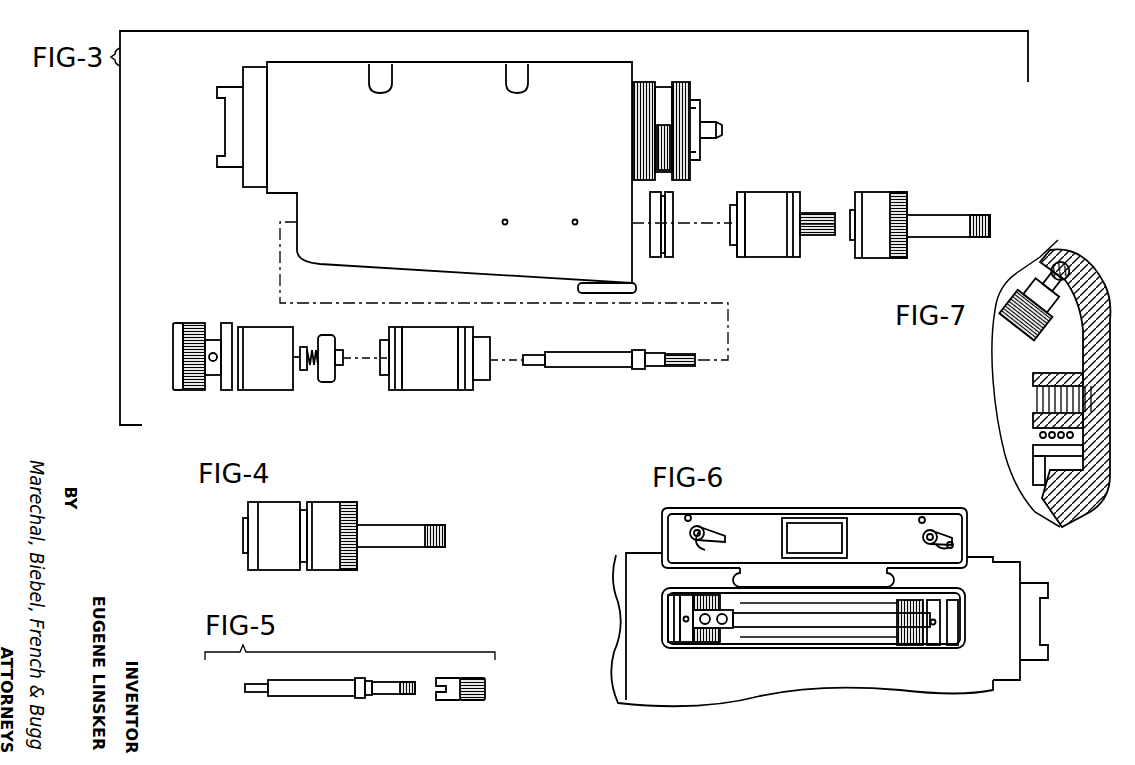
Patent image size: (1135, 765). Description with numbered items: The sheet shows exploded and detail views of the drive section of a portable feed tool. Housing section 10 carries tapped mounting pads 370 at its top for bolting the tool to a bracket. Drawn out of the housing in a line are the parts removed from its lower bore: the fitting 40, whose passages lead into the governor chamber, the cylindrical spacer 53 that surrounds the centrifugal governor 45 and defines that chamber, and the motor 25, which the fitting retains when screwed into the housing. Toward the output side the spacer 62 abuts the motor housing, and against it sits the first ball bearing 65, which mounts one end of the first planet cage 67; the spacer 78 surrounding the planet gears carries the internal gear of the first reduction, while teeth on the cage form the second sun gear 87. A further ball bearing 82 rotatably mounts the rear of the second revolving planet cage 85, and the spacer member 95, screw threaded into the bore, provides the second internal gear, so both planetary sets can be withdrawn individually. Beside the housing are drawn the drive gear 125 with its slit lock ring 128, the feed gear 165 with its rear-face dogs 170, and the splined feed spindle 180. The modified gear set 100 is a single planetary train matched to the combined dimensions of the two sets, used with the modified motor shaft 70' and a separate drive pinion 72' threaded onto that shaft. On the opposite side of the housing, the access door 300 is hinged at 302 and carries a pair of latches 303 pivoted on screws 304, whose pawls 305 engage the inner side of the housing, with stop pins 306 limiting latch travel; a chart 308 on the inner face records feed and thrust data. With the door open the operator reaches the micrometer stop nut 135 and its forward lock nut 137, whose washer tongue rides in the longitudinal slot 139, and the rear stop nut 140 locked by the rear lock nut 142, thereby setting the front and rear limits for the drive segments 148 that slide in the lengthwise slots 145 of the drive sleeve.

In FIG. 3, the housing section 10 is at (443, 137).
In FIG. 6, the housing section 10 is at (779, 690).
In FIG. 3, the mounting pads 370 is at (375, 70).
In FIG. 3, the drive gear 125 is at (645, 82).
In FIG. 3, the lock ring 128 is at (664, 88).
In FIG. 3, the feed gear 165 is at (683, 82).
In FIG. 3, the dogs 170 is at (700, 100).
In FIG. 3, the feed spindle 180 is at (713, 131).
In FIG. 3, the spacer 62 is at (665, 257).
In FIG. 3, the first ball bearing 65 is at (742, 257).
In FIG. 3, the spacer 78 is at (760, 257).
In FIG. 3, the first planet cage 67 is at (806, 211).
In FIG. 3, the second sun gear 87 is at (822, 236).
In FIG. 3, the ball bearing 82 is at (862, 196).
In FIG. 3, the spacer member 95 is at (878, 258).
In FIG. 3, the second revolving planet cage 85 is at (938, 215).
In FIG. 3, the fitting 40 is at (220, 394).
In FIG. 3, the cylindrical spacer 53 is at (268, 390).
In FIG. 3, the centrifugal governor 45 is at (322, 386).
In FIG. 3, the motor 25 is at (425, 391).
In FIG. 4, the modified gear set 100 is at (316, 493).
In FIG. 5, the modified motor shaft 70' is at (330, 704).
In FIG. 5, the modified drive pinion 72' is at (465, 708).
In FIG. 6, the access door 300 is at (765, 520).
In FIG. 7, the access door 300 is at (1096, 490).
In FIG. 6, the hinge 302 is at (855, 578).
In FIG. 7, the hinge 302 is at (1067, 256).
In FIG. 6, the latches 303 is at (720, 533).
In FIG. 6, the pawls 305 is at (726, 539).
In FIG. 7, the pawls 305 is at (1035, 450).
In FIG. 6, the stop pins 306 is at (685, 518).
In FIG. 7, the stop pins 306 is at (1035, 404).
In FIG. 6, the chart 308 is at (826, 524).
In FIG. 6, the rear lock nut 142 is at (668, 641).
In FIG. 6, the rear stop nut 140 is at (688, 643).
In FIG. 6, the drive segment 148 is at (730, 630).
In FIG. 6, the lengthwise slots 145 is at (822, 628).
In FIG. 6, the longitudinal slot 139 is at (905, 642).
In FIG. 6, the micrometer stop nut 135 is at (935, 646).
In FIG. 6, the forward lock nut 137 is at (952, 646).
In FIG. 7, the screws 304 is at (1035, 392).